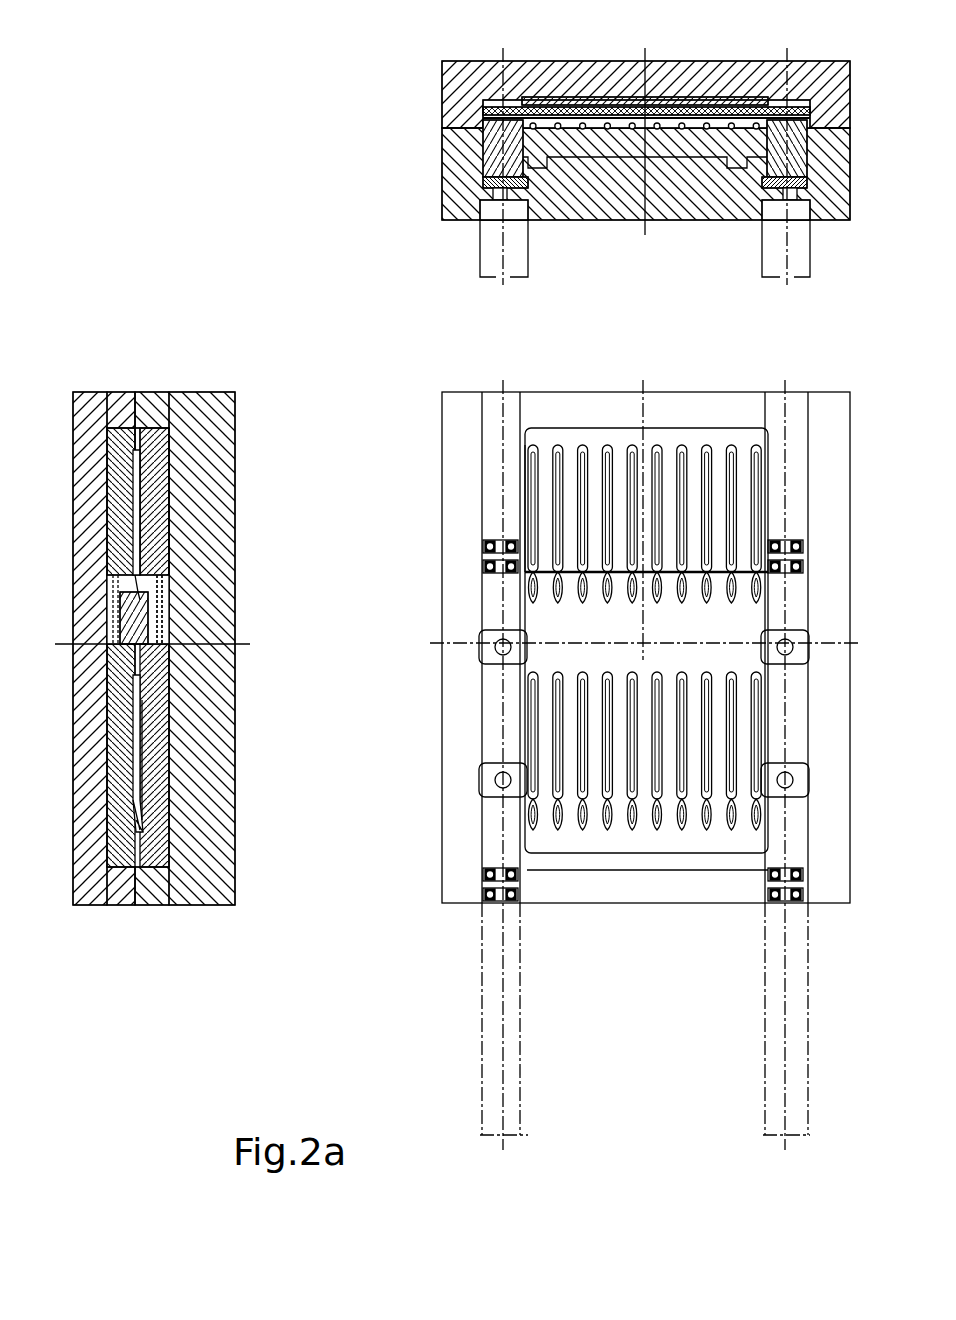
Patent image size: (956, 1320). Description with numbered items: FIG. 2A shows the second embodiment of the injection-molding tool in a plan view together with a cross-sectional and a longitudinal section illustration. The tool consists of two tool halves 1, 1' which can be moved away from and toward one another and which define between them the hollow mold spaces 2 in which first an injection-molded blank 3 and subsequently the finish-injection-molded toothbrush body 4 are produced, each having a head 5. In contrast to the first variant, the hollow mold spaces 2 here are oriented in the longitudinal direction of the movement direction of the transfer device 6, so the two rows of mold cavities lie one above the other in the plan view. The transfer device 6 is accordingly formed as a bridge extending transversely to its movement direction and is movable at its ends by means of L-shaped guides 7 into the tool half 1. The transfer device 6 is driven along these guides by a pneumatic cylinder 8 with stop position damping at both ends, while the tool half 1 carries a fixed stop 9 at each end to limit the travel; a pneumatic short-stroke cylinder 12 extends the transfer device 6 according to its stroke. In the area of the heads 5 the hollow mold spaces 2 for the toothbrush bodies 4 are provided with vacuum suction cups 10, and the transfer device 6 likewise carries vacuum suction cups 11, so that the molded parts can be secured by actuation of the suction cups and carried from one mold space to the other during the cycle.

The tool half 1 is at (456, 516).
The tool half 1' is at (618, 141).
The hollow mold space 2 is at (557, 112).
The injection-molded blank 3 is at (143, 763).
The finish-injection-molded toothbrush body 4 is at (143, 543).
The head 5 is at (173, 605).
The transfer device 6 is at (502, 150).
The guide 7 is at (483, 167).
The pneumatic cylinder 8 is at (502, 983).
The fixed stop 9 is at (487, 563).
The vacuum suction cup 10 is at (143, 605).
The vacuum suction cup 11 is at (170, 580).
The pneumatic short-stroke cylinder 12 is at (493, 253).